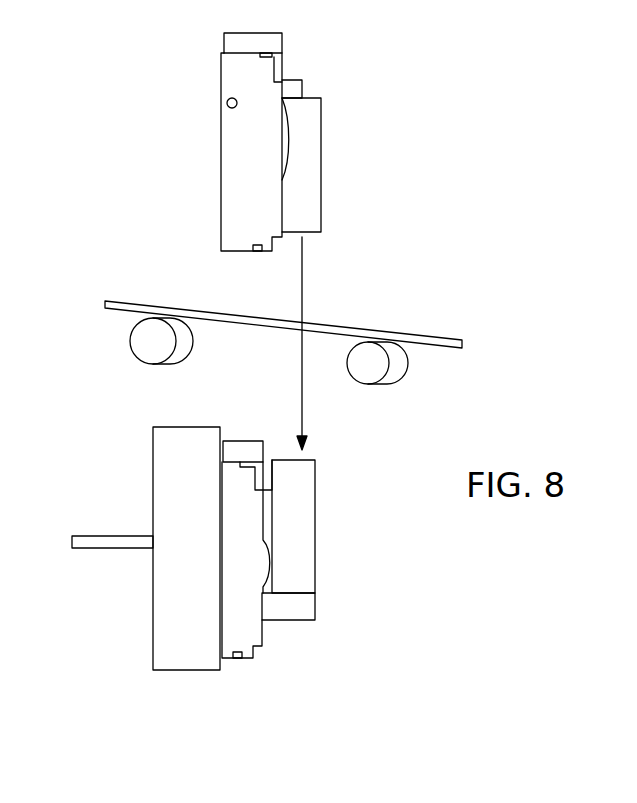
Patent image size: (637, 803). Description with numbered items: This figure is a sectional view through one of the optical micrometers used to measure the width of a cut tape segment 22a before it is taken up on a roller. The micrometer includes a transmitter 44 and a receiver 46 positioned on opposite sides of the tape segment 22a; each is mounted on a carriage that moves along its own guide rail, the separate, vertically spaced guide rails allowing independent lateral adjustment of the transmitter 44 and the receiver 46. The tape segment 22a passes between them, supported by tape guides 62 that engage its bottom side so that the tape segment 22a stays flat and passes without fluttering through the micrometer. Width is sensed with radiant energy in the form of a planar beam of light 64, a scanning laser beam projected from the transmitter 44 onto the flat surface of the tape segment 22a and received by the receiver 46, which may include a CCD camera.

The tape segment 22a is at (443, 340).
The transmitter 44 is at (290, 90).
The receiver 46 is at (293, 610).
The tape guide 62 is at (148, 342).
The planar beam of light 64 is at (302, 292).